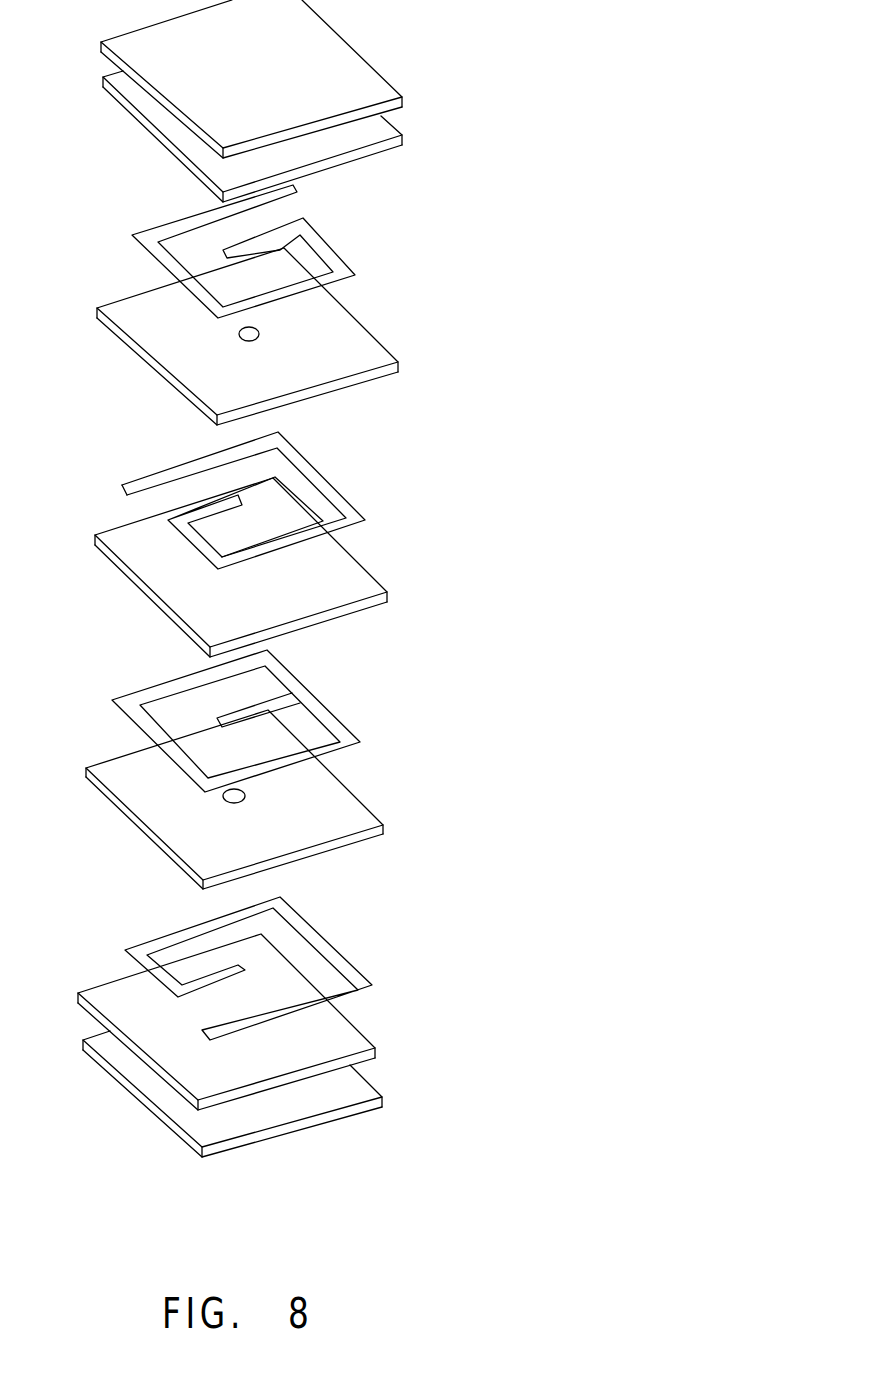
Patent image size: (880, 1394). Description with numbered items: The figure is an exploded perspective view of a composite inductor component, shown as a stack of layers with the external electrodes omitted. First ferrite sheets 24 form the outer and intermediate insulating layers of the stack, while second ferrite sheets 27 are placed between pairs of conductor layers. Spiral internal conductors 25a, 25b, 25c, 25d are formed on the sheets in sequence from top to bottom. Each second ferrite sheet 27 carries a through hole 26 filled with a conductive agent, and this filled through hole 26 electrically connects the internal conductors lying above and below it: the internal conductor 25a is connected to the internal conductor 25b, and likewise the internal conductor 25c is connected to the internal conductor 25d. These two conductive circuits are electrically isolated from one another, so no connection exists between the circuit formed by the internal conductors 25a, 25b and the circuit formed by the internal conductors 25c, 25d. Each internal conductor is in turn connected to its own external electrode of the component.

The first ferrite sheet 24 is at (407, 110).
The internal conductor 25a is at (298, 253).
The internal conductor 25b is at (322, 468).
The internal conductor 25c is at (310, 693).
The internal conductor 25d is at (320, 930).
The through hole filled with a conductive agent 26 is at (258, 331).
The second ferrite sheet 27 is at (387, 352).